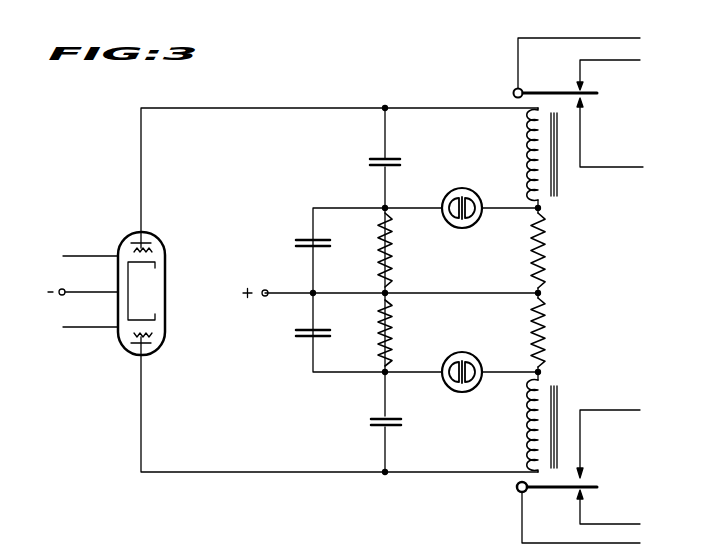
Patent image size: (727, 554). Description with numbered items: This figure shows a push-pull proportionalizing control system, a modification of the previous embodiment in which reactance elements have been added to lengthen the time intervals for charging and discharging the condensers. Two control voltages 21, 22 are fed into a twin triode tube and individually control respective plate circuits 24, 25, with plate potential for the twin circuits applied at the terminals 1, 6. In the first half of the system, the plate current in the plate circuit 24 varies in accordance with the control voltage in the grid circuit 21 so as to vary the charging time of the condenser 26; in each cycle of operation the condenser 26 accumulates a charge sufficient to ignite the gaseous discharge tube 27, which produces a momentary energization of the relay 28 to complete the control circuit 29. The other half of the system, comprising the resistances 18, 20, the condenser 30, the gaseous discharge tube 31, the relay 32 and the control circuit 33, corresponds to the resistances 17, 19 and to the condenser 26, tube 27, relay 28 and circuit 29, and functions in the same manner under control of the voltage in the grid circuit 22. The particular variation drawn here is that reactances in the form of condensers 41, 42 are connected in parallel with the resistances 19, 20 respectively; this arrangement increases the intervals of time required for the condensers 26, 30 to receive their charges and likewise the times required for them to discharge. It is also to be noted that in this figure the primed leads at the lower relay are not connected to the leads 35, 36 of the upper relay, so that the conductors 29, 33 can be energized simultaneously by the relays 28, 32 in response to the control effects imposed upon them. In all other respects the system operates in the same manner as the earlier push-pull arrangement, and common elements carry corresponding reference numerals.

The plate potential terminal 1 is at (300, 293).
The plate potential terminal 6 is at (92, 293).
The resistance 17 is at (546, 262).
The resistance 18 is at (546, 341).
The resistance 19 is at (394, 257).
The resistance 20 is at (394, 323).
The control voltage grid circuit 21 is at (100, 256).
The control voltage grid circuit 22 is at (100, 327).
The plate circuit 24 is at (141, 218).
The plate circuit 25 is at (142, 383).
The condenser 26 is at (392, 168).
The gaseous discharge tube 27 is at (477, 196).
The relay 28 is at (558, 192).
The control circuit 29 is at (628, 167).
The condenser 30 is at (398, 425).
The gaseous discharge tube 31 is at (477, 360).
The relay 32 is at (559, 399).
The control circuit 33 is at (625, 410).
The lead 35 is at (620, 38).
The lead 36 is at (620, 60).
The condenser 41 is at (320, 246).
The condenser 42 is at (322, 330).